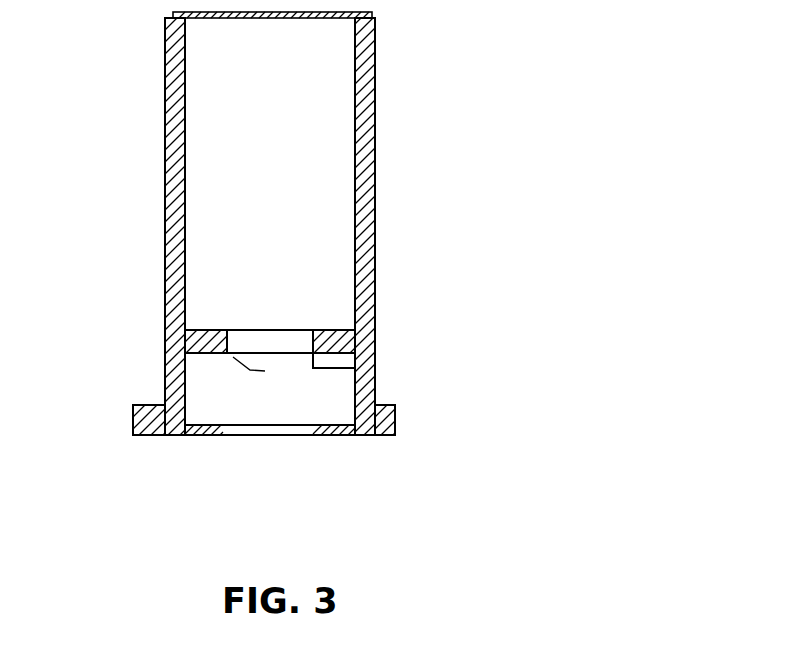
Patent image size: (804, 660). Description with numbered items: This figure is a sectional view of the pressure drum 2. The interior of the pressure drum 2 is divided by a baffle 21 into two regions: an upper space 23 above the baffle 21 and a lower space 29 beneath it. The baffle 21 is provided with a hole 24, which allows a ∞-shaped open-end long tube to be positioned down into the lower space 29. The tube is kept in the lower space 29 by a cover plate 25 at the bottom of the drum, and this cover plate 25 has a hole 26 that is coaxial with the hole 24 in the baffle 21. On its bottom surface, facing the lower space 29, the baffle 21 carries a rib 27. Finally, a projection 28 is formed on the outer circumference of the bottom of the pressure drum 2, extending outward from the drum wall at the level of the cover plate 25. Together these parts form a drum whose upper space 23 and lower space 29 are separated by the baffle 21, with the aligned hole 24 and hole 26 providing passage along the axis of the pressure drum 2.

The pressure drum 2 is at (384, 223).
The baffle 21 is at (325, 328).
The upper space 23 is at (312, 115).
The hole 24 is at (257, 340).
The cover plate 25 is at (340, 437).
The hole 26 is at (268, 437).
The rib 27 is at (243, 373).
The projection 28 is at (133, 423).
The lower space 29 is at (327, 400).